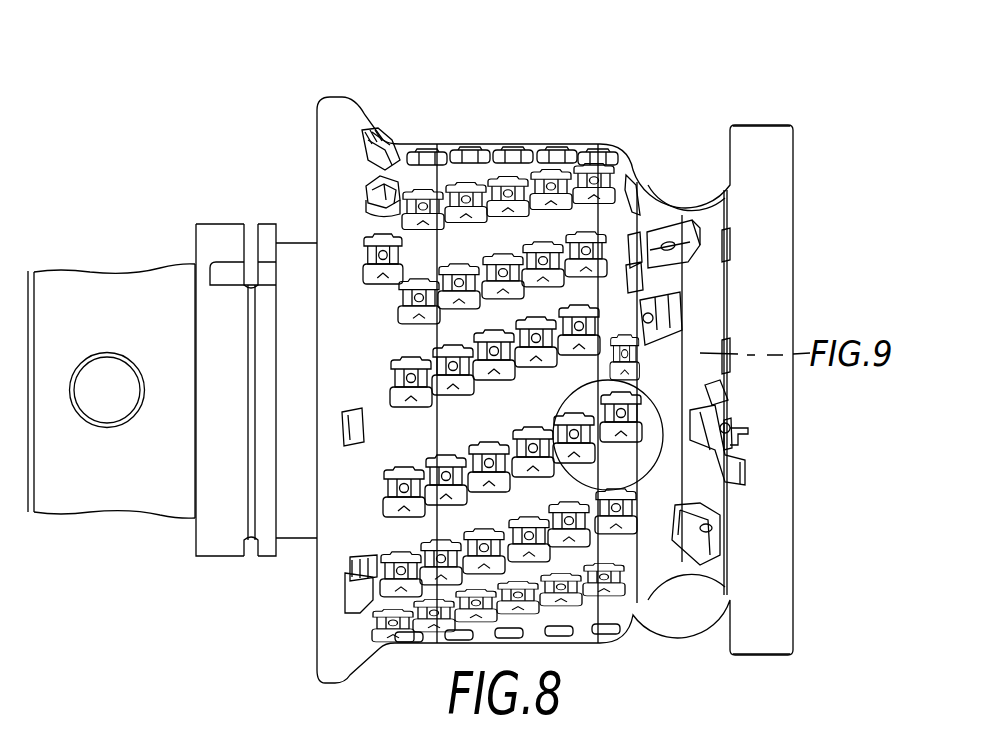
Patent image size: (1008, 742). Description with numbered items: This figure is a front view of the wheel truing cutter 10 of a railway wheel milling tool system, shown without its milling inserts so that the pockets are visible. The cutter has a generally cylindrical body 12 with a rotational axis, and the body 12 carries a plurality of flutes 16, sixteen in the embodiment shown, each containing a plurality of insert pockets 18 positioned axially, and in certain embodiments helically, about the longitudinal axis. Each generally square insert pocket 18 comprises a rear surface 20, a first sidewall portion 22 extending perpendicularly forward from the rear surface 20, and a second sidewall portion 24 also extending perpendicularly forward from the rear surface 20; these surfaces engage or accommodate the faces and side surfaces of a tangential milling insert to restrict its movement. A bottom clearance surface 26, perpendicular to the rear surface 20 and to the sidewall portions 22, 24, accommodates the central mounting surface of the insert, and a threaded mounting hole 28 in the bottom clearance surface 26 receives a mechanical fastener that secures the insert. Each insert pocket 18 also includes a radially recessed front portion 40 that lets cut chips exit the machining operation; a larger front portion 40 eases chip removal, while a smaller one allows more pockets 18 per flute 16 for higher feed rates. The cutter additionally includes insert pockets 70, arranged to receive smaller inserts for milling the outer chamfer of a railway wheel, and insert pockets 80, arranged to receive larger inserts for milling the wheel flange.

The wheel truing cutter 10 is at (196, 141).
The body 12 is at (752, 137).
The flute 16 is at (383, 377).
The insert pocket 18 is at (509, 248).
The rear surface 20 is at (606, 350).
The first sidewall portion 22 is at (662, 392).
The second sidewall portion 24 is at (532, 433).
The bottom clearance surface 26 is at (562, 422).
The threaded mounting hole 28 is at (655, 462).
The radially recessed front portion 40 is at (585, 478).
The insert pocket 70 is at (363, 253).
The insert pocket 80 is at (665, 230).